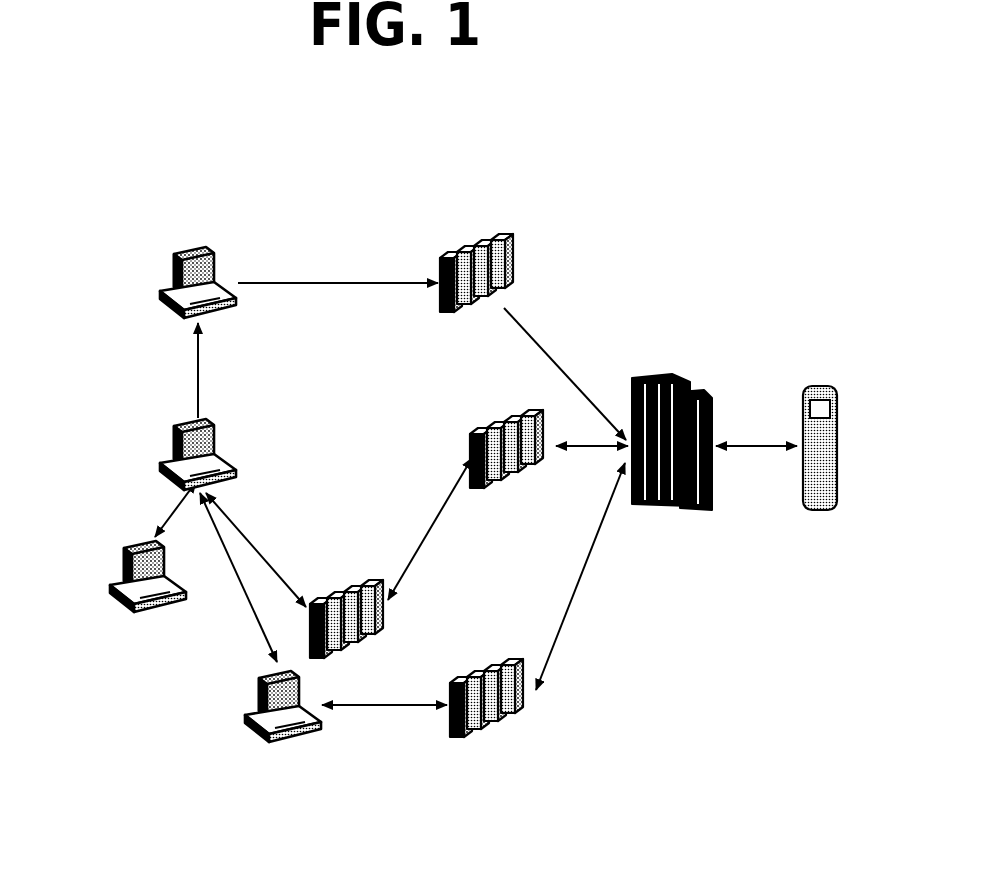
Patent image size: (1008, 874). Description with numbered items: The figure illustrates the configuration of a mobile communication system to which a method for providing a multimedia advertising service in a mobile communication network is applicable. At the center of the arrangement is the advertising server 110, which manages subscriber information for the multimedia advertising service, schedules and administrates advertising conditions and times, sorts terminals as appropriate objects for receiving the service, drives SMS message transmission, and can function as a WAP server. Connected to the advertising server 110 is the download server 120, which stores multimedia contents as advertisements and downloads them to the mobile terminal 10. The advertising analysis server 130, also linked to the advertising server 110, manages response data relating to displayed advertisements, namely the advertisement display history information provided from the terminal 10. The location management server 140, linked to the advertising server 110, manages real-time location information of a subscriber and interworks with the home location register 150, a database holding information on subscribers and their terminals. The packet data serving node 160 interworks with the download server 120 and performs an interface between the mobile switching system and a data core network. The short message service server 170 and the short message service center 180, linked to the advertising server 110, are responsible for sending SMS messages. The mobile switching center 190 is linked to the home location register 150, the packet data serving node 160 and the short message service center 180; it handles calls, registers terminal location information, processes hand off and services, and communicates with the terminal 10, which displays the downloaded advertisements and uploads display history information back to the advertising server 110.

The mobile terminal 10 is at (820, 508).
The advertising server 110 is at (213, 432).
The download server 120 is at (277, 740).
The advertising analysis server 130 is at (138, 547).
The location management server 140 is at (388, 610).
The home location register (HLR) 150 is at (483, 432).
The packet data serving node (PDSN) 160 is at (493, 725).
The short message service server (SMSS) 170 is at (212, 258).
The short message service center (SMSC) 180 is at (520, 252).
The mobile switching center (MSC) 190 is at (683, 512).